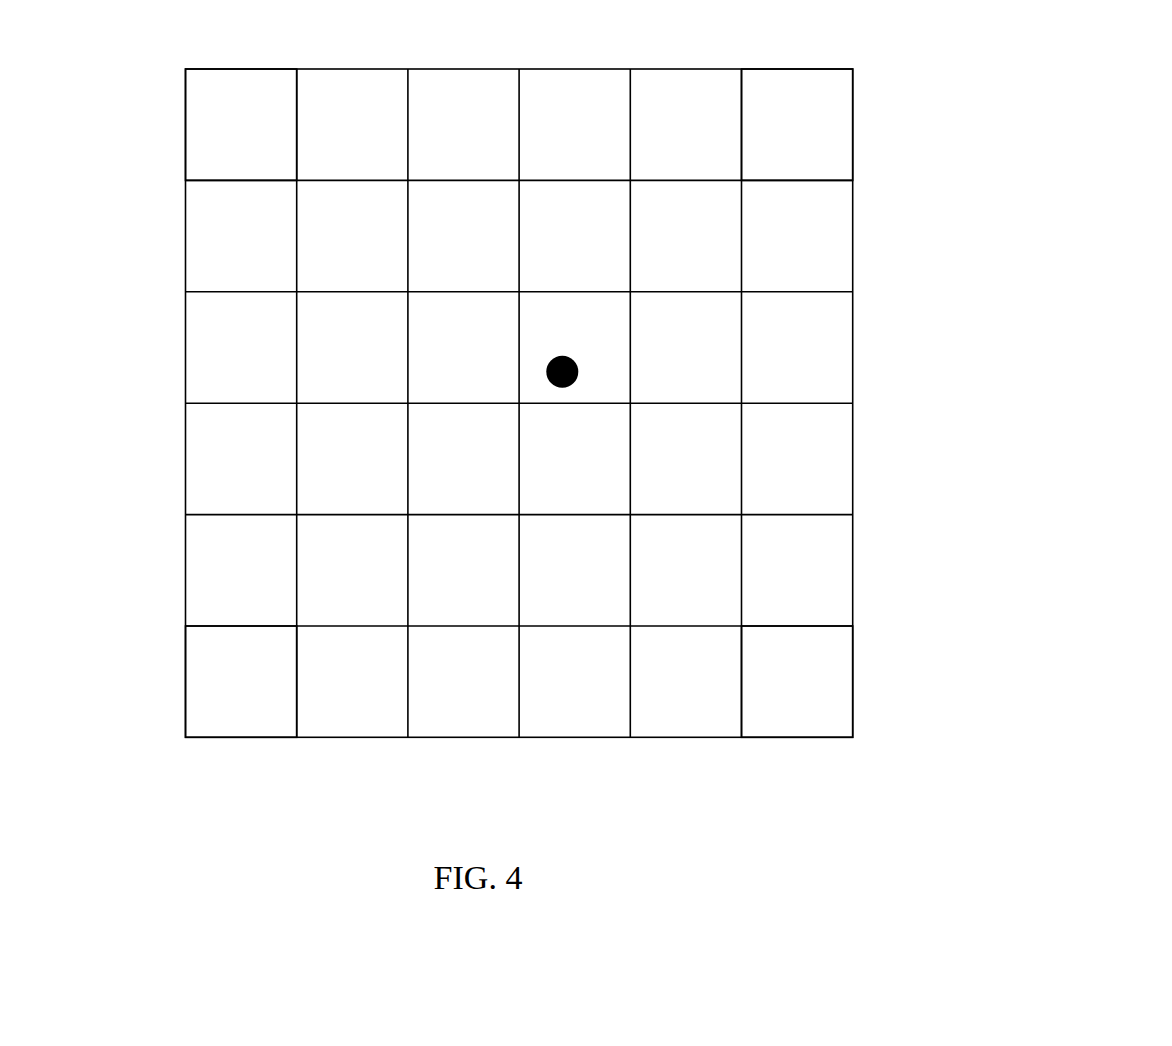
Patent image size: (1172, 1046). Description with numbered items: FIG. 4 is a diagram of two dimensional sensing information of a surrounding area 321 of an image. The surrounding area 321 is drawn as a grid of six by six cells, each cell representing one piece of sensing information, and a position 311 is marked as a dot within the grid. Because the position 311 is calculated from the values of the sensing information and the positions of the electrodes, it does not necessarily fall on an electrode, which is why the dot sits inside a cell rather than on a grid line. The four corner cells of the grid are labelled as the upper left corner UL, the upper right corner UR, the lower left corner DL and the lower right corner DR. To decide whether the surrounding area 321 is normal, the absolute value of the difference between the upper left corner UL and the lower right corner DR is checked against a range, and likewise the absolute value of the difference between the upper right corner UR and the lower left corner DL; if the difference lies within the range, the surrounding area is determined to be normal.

The position 311 is at (560, 388).
The surrounding area 321 is at (1118, 52).
The upper left corner UL is at (241, 124).
The upper right corner UR is at (797, 124).
The lower left corner DL is at (241, 681).
The lower right corner DR is at (797, 681).